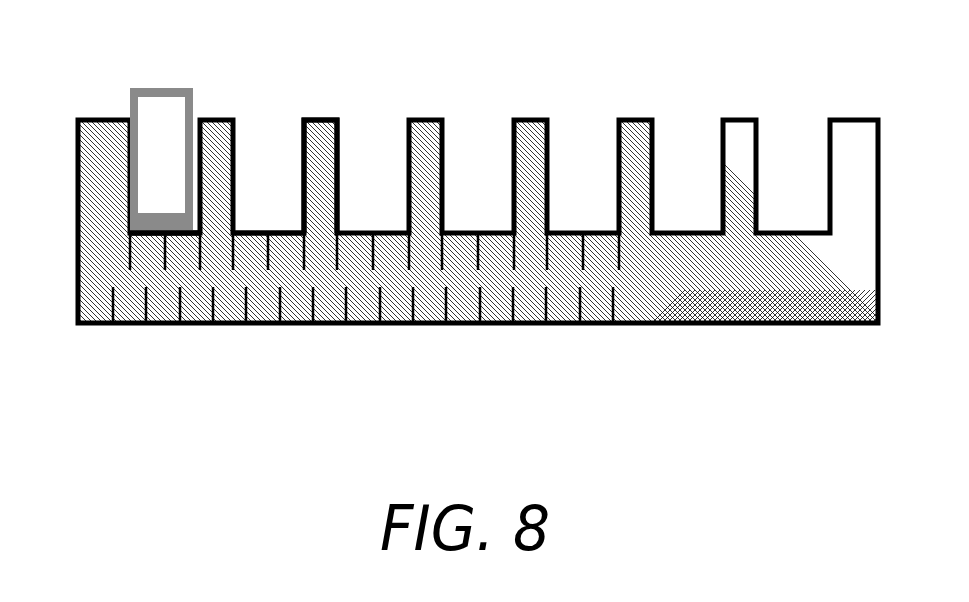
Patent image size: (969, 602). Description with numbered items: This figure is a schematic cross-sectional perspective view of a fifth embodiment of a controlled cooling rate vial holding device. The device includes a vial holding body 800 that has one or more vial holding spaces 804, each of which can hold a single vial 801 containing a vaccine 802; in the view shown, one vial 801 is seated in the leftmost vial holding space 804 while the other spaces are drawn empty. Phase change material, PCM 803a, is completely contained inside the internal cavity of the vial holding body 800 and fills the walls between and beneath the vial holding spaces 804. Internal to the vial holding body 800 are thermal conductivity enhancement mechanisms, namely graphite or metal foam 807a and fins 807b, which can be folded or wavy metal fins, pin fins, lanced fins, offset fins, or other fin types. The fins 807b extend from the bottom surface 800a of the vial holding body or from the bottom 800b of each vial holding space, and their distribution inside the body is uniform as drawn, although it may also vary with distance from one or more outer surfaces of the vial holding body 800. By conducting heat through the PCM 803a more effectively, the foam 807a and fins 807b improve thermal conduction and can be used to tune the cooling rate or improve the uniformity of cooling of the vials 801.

The vial holding body 800 is at (855, 118).
The bottom surface of the vial holding body 800a is at (143, 240).
The bottom of the vial holding space 800b is at (258, 236).
The vial 801 is at (175, 112).
The vaccine 802 is at (162, 212).
The PCM 803a is at (323, 167).
The vial holding space 804 is at (797, 217).
The graphite or metal foam 807a is at (808, 302).
The fins 807b is at (178, 303).